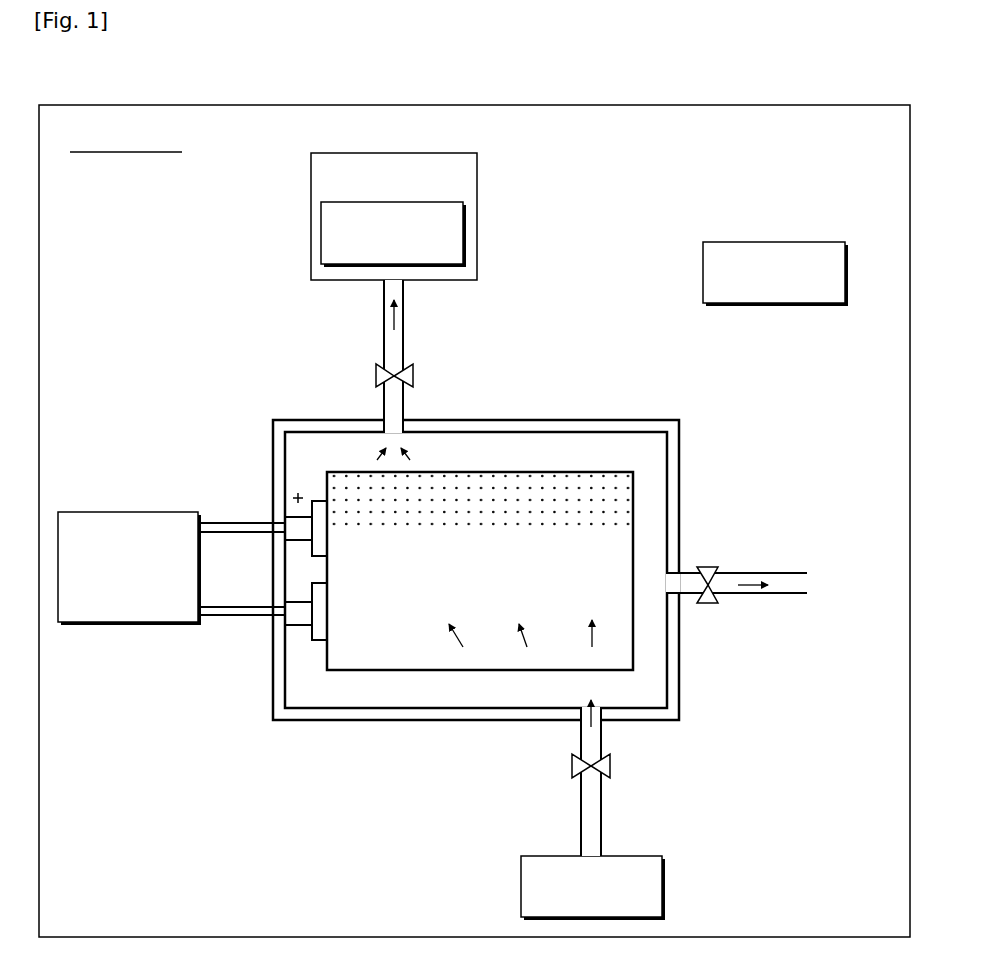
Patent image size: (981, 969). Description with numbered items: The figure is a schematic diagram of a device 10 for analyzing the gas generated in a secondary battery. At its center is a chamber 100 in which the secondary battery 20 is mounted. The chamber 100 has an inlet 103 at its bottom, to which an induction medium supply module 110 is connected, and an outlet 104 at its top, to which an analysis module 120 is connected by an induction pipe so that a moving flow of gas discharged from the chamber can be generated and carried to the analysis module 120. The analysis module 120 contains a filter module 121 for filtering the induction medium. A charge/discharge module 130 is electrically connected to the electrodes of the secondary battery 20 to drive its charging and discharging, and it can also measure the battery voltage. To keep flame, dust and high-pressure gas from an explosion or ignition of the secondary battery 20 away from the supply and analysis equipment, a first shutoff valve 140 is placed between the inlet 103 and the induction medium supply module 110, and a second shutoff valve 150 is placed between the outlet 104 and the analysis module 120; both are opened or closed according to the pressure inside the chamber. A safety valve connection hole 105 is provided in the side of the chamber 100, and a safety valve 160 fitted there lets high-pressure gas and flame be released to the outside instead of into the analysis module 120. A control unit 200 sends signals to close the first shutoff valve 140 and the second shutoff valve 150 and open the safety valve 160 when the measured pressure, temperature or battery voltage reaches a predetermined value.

The device for analyzing generated gas in a secondary battery 10 is at (818, 105).
The secondary battery 20 is at (635, 645).
The chamber 100 is at (702, 488).
The inlet 103 is at (601, 713).
The outlet 104 is at (406, 427).
The safety valve connection hole 105 is at (679, 594).
The induction medium supply module 110 is at (543, 856).
The analysis module 120 is at (394, 153).
The filter module 121 is at (321, 233).
The charge/discharge module 130 is at (128, 512).
The first shutoff valve 140 is at (572, 766).
The second shutoff valve 150 is at (376, 376).
The safety valve 160 is at (237, 522).
The control unit 200 is at (726, 242).